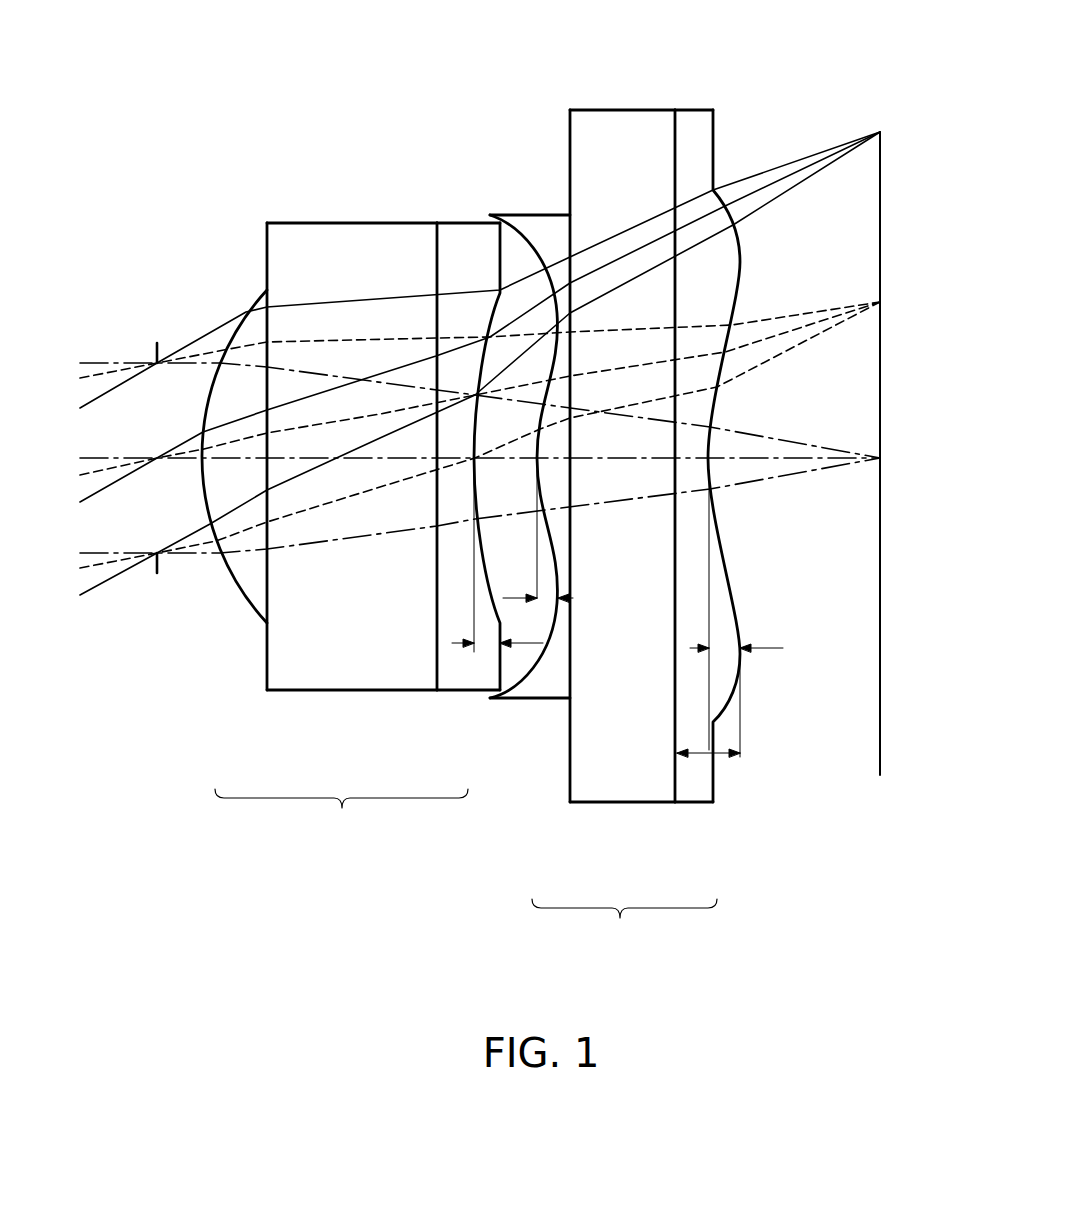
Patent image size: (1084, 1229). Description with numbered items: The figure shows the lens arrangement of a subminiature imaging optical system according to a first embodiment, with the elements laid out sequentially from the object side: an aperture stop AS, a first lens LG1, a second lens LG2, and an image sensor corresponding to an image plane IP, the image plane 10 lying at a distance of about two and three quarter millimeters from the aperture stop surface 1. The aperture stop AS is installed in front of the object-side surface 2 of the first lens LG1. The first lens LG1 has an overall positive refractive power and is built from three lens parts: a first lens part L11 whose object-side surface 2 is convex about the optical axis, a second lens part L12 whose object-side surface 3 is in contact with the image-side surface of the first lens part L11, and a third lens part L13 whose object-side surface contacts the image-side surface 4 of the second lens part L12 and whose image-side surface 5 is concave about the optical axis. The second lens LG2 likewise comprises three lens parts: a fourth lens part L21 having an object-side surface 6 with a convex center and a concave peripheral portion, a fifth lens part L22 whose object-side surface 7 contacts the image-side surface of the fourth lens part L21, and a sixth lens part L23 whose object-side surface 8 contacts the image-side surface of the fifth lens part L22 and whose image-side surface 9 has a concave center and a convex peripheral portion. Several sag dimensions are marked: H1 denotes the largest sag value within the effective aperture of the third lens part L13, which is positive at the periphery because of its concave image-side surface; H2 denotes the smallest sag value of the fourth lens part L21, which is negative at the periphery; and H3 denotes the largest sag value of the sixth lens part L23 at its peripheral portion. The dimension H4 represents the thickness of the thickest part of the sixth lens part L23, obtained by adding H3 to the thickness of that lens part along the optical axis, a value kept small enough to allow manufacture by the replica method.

The aperture stop surface 1 is at (139, 468).
The object-side surface 2 is at (263, 293).
The object-side surface 3 is at (265, 232).
The image-side surface 4 is at (437, 222).
The image-side surface 5 is at (498, 250).
The object-side surface 6 is at (527, 238).
The object-side surface 7 is at (569, 128).
The object-side surface 8 is at (673, 128).
The image-side surface 9 is at (715, 138).
The image plane 10 is at (899, 491).
The aperture stop AS is at (157, 573).
The image plane IP is at (880, 778).
The first lens part L11 is at (234, 511).
The second lens part L12 is at (337, 469).
The third lens part L13 is at (463, 459).
The first lens LG1 is at (341, 816).
The fourth lens part L21 is at (530, 467).
The fifth lens part L22 is at (622, 453).
The sixth lens part L23 is at (714, 477).
The second lens LG2 is at (624, 927).
The largest sag value of the third lens part H1 is at (498, 555).
The smallest sag value of the fourth lens part H2 is at (534, 536).
The largest sag value of the sixth lens part H3 is at (739, 610).
The thickness of the thickest part of the sixth lens part H4 is at (708, 702).